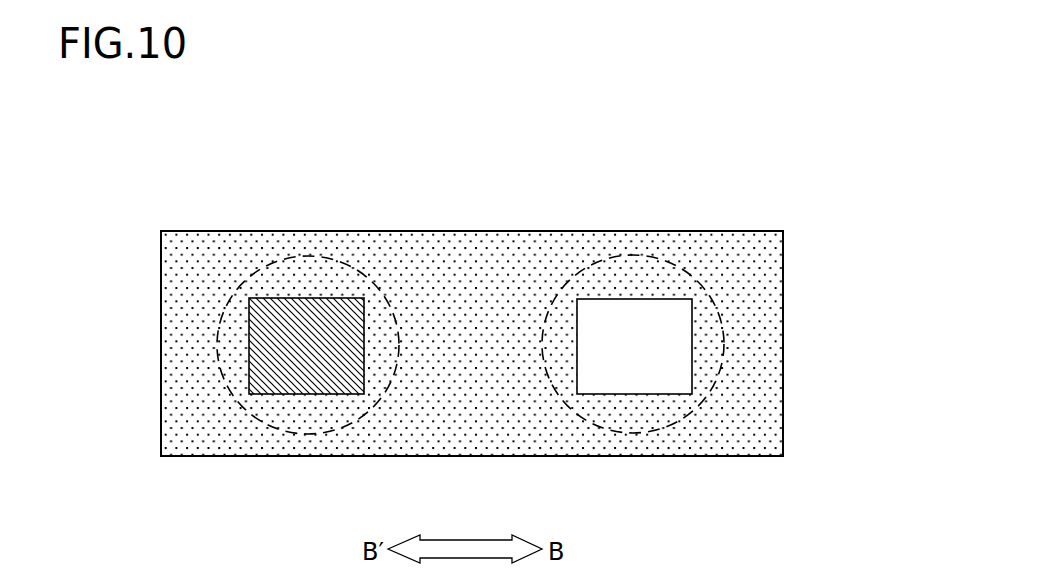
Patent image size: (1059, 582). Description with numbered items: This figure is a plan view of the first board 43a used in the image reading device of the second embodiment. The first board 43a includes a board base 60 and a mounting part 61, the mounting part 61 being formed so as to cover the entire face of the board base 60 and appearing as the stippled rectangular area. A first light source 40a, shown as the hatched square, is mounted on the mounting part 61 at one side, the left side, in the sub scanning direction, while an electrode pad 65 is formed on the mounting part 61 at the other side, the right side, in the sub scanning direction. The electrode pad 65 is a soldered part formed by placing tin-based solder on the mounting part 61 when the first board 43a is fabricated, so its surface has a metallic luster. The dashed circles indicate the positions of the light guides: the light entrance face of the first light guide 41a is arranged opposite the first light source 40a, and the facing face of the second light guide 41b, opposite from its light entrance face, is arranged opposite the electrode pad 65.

The first board 43a is at (595, 157).
The board base 60 is at (472, 299).
The mounting part 61 is at (216, 256).
The first light guide 41a is at (360, 250).
The second light guide 41b is at (688, 272).
The first light source 40a is at (307, 377).
The electrode pad 65 is at (643, 375).